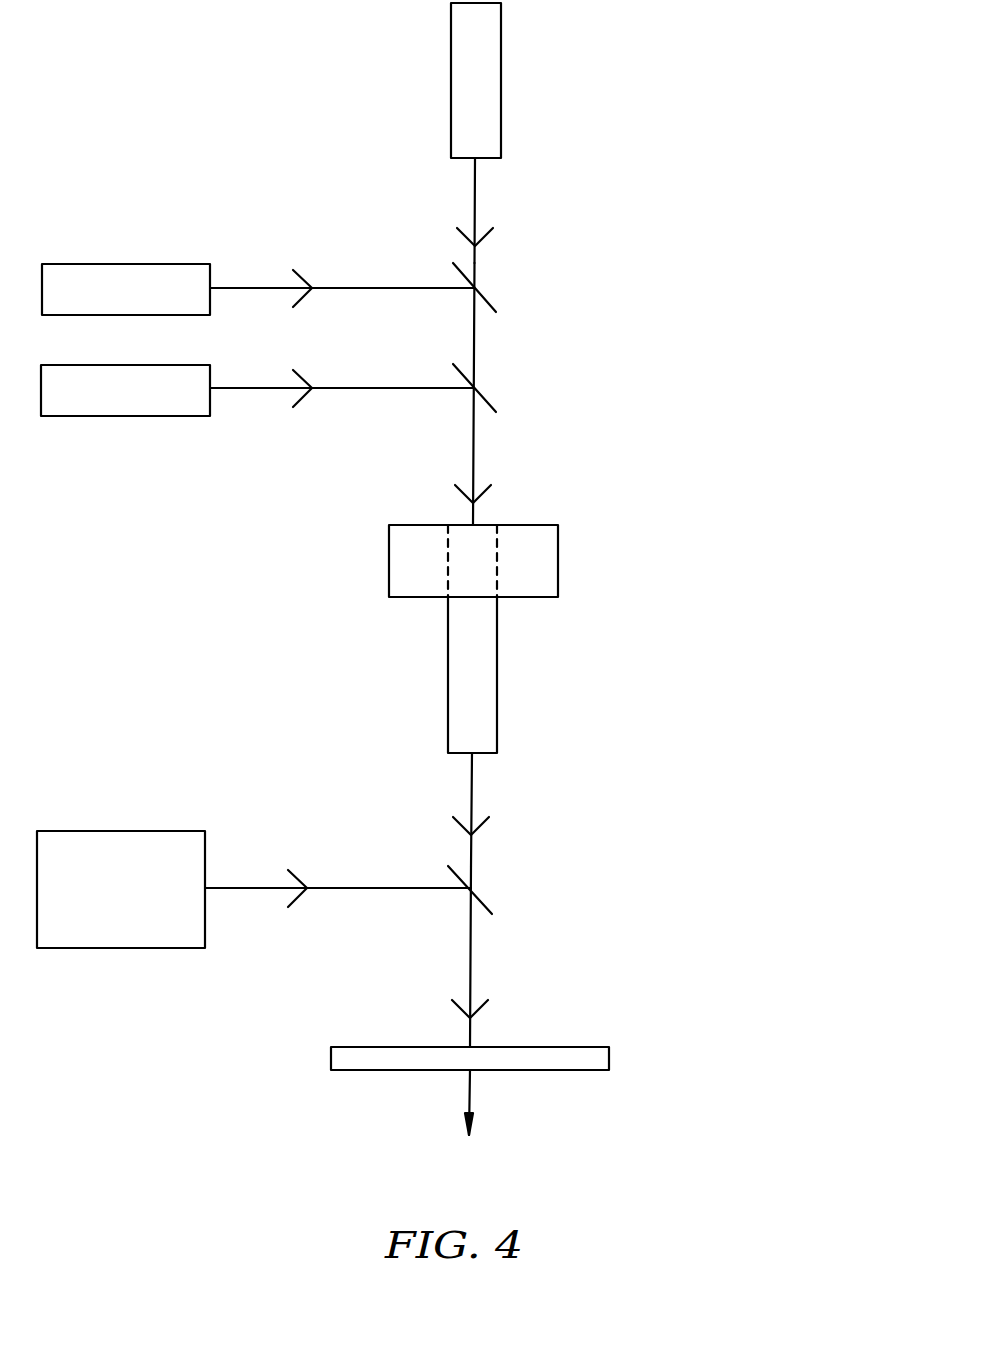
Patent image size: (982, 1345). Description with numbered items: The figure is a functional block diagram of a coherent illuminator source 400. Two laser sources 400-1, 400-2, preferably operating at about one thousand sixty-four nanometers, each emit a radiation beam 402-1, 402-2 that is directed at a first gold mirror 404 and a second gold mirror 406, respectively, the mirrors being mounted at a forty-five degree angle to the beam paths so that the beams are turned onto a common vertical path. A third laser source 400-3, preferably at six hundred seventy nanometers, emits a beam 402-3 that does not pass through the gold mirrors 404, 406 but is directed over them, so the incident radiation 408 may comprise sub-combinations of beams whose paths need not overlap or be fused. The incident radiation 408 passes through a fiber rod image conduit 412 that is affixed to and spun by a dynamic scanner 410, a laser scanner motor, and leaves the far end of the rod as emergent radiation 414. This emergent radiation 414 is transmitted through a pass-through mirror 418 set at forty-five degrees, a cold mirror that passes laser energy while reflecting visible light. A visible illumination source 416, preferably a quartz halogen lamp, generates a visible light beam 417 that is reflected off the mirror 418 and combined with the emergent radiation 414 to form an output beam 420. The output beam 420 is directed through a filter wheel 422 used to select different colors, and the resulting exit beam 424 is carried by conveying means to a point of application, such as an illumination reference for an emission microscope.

The coherent illuminator source 400 is at (732, 791).
The laser source 400-1 is at (120, 264).
The laser source 400-2 is at (118, 365).
The laser source 400-3 is at (501, 75).
The radiation beam 402-1 is at (372, 288).
The radiation beam 402-2 is at (372, 388).
The beam 402-3 is at (475, 198).
The first gold mirror 404 is at (488, 293).
The second gold mirror 406 is at (488, 396).
The incident radiation 408 is at (473, 462).
The dynamic scanner 410 is at (558, 558).
The fiber rod image conduit 412 is at (497, 662).
The emergent radiation 414 is at (472, 790).
The visible illumination source 416 is at (170, 831).
The visible light beam 417 is at (332, 888).
The pass-through mirror 418 is at (478, 897).
The output beam 420 is at (470, 962).
The filter wheel 422 is at (553, 1047).
The exit beam 424 is at (470, 1098).